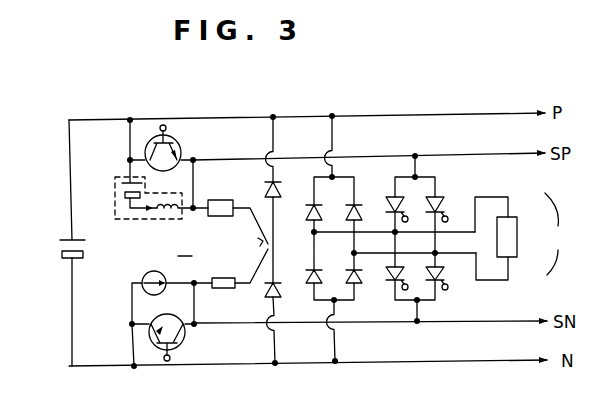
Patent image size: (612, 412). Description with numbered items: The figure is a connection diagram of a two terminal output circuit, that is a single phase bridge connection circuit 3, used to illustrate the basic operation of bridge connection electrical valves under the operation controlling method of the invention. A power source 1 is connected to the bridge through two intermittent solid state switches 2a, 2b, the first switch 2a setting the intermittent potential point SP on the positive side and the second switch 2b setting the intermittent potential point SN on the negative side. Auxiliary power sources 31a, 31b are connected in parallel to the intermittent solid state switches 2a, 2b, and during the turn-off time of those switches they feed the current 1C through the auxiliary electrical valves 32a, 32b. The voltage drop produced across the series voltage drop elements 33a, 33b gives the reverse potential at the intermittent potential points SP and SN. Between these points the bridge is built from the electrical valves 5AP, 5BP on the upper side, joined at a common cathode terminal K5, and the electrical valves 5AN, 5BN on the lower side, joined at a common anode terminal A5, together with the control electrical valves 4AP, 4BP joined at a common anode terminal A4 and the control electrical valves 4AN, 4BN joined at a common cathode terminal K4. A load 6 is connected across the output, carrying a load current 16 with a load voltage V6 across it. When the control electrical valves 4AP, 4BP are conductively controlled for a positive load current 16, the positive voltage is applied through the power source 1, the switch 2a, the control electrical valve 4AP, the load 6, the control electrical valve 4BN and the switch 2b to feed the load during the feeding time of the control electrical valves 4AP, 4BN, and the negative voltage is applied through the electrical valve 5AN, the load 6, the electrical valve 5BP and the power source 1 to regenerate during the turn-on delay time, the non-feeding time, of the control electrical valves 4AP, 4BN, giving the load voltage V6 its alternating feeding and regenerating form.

The power source 1 is at (56, 252).
The intermittent solid state switch 2a is at (182, 147).
The intermittent solid state switch 2b is at (183, 340).
The connection circuit 3 is at (185, 245).
The current 1C is at (164, 260).
The auxiliary power source 31a is at (117, 219).
The auxiliary power source 31b is at (136, 285).
The auxiliary electrical valve 32a is at (266, 292).
The auxiliary electrical valve 32b is at (266, 191).
The series voltage drop element 33a is at (230, 223).
The series voltage drop element 33b is at (224, 278).
The electrical valve 5AP is at (306, 211).
The electrical valve 5BP is at (362, 209).
The electrical valve 5AN is at (308, 280).
The electrical valve 5BN is at (349, 281).
The control electrical valve 4AP is at (405, 202).
The control electrical valve 4BP is at (446, 199).
The control electrical valve 4AN is at (390, 271).
The control electrical valve 4BN is at (445, 274).
The cathode terminal K5 is at (330, 177).
The cathode terminal K4 is at (420, 302).
The anode terminal A4 is at (420, 178).
The anode terminal A5 is at (332, 302).
The load 6 is at (518, 243).
The load current 16 is at (486, 197).
The load voltage V6 is at (561, 234).